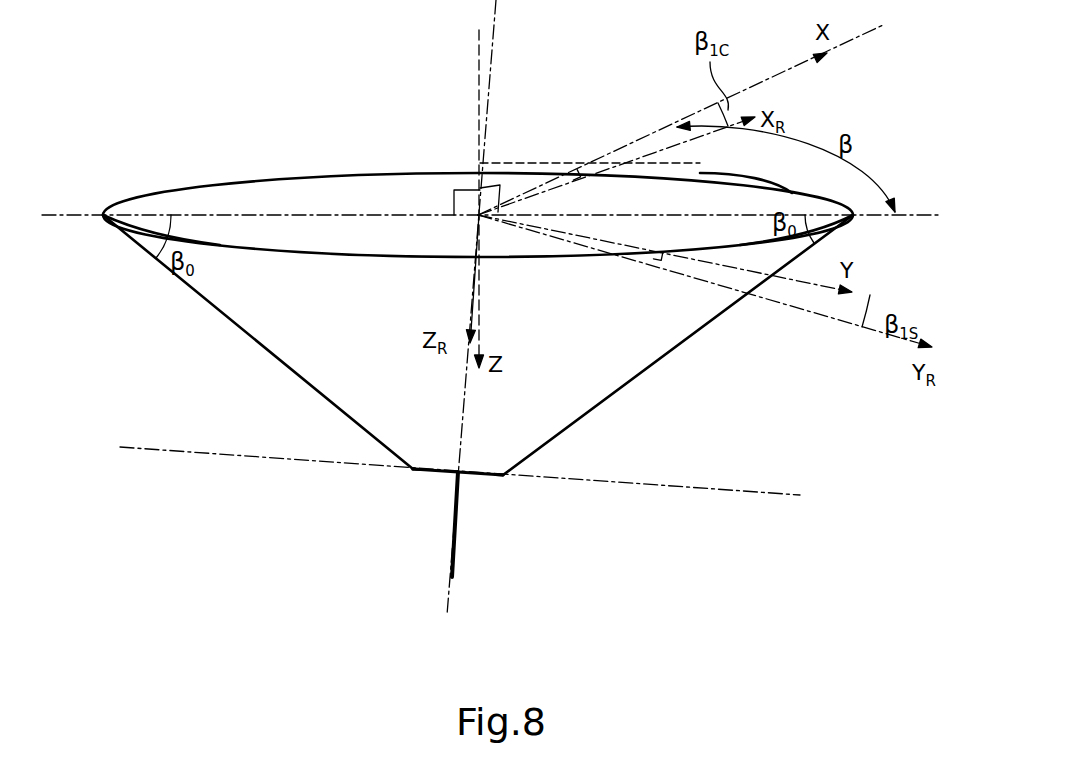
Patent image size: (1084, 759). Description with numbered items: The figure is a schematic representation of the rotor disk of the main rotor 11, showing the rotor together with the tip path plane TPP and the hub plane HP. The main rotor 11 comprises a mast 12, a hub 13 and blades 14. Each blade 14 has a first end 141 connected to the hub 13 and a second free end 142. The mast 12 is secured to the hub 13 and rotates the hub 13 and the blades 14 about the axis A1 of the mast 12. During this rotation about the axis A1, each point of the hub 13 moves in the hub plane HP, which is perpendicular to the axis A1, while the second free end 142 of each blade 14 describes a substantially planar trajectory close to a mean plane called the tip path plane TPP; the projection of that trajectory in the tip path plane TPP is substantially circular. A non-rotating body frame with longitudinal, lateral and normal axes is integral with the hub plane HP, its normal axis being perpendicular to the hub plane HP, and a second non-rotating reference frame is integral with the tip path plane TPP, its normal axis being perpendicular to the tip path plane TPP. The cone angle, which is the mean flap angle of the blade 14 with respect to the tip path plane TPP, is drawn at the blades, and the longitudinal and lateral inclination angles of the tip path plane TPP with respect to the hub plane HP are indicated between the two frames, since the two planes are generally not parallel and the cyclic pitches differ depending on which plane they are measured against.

The main rotor 11 is at (778, 408).
The mast 12 is at (450, 528).
The hub 13 is at (478, 478).
The blade 14 is at (272, 357).
The first end 141 is at (418, 468).
The second free end 142 is at (103, 215).
The axis of the mast A1 is at (448, 594).
The hub plane HP is at (460, 515).
The tip path plane TPP is at (792, 193).